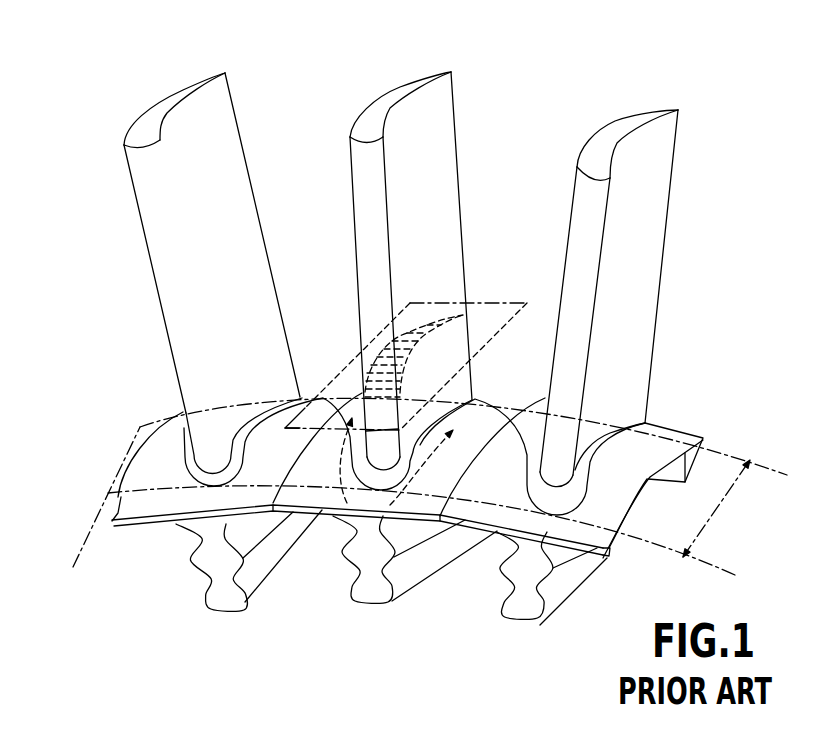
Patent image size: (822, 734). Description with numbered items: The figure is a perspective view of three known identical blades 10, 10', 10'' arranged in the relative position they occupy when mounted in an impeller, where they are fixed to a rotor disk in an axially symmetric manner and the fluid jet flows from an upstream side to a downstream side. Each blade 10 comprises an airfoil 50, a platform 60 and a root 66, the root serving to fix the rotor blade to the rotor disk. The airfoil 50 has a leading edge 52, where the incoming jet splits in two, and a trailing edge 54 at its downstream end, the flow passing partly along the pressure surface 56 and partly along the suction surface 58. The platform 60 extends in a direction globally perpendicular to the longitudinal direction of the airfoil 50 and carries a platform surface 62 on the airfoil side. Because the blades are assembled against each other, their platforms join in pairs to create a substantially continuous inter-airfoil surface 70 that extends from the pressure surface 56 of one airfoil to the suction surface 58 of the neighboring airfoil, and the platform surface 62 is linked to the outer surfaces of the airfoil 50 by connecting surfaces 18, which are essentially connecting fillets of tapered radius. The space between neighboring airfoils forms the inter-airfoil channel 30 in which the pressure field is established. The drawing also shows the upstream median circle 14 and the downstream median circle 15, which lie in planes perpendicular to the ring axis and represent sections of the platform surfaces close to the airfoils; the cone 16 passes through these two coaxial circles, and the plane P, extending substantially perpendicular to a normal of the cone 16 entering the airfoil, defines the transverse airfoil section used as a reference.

The blade 10 is at (616, 273).
The blade 10' is at (402, 250).
The blade 10'' is at (209, 227).
The upstream median circle 14 is at (421, 536).
The downstream median circle 15 is at (463, 436).
The cone 16 is at (720, 518).
The connecting surfaces 18 is at (303, 397).
The inter-airfoil channel 30 is at (298, 154).
The airfoil 50 is at (652, 155).
The leading edge 52 is at (579, 264).
The trailing edge 54 is at (648, 342).
The pressure surface 56 is at (638, 252).
The suction surface 58 is at (633, 150).
The platform 60 is at (690, 422).
The platform surface 62 is at (628, 472).
The root 66 is at (562, 597).
The inter-airfoil surface 70 is at (333, 396).
The plane P is at (525, 302).